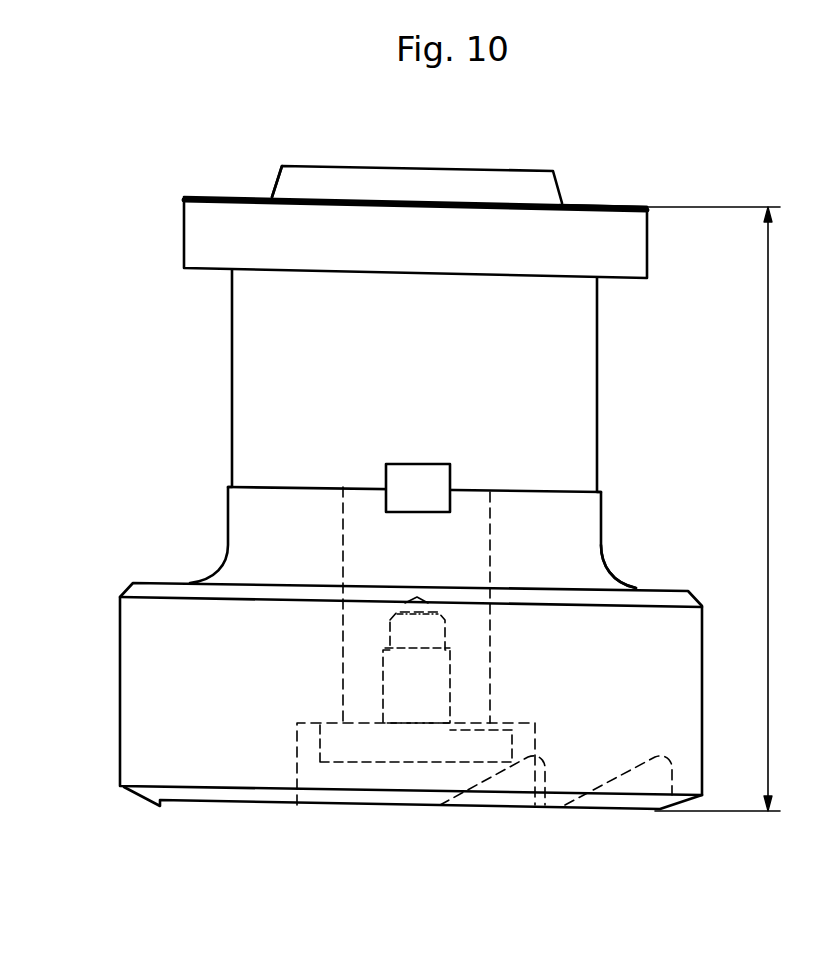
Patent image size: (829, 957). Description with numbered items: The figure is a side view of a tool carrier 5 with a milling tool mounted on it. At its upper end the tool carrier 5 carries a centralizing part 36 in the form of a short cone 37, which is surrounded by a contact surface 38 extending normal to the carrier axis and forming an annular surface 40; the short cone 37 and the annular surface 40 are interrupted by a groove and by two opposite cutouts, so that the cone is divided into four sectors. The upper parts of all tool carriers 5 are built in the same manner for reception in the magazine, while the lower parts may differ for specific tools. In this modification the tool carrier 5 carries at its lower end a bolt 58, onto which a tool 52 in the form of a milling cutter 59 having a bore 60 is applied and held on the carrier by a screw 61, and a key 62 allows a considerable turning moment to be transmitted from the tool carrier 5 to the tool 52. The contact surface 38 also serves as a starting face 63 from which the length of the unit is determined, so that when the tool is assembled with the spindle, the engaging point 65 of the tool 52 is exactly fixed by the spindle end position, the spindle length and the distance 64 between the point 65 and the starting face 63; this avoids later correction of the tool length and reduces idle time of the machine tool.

The tool carrier 5 is at (570, 368).
The centralizing part 36 is at (521, 171).
The short cone 37 is at (271, 196).
The contact surface 38 is at (625, 206).
The annular surface 40 is at (217, 197).
The tool 52 is at (632, 587).
The bolt 58 is at (343, 510).
The milling cutter 59 is at (168, 687).
The bore 60 is at (490, 665).
The screw 61 is at (358, 742).
The key 62 is at (440, 482).
The starting face 63 is at (697, 206).
The height dimension 64 is at (768, 397).
The engaging point 65 is at (658, 810).